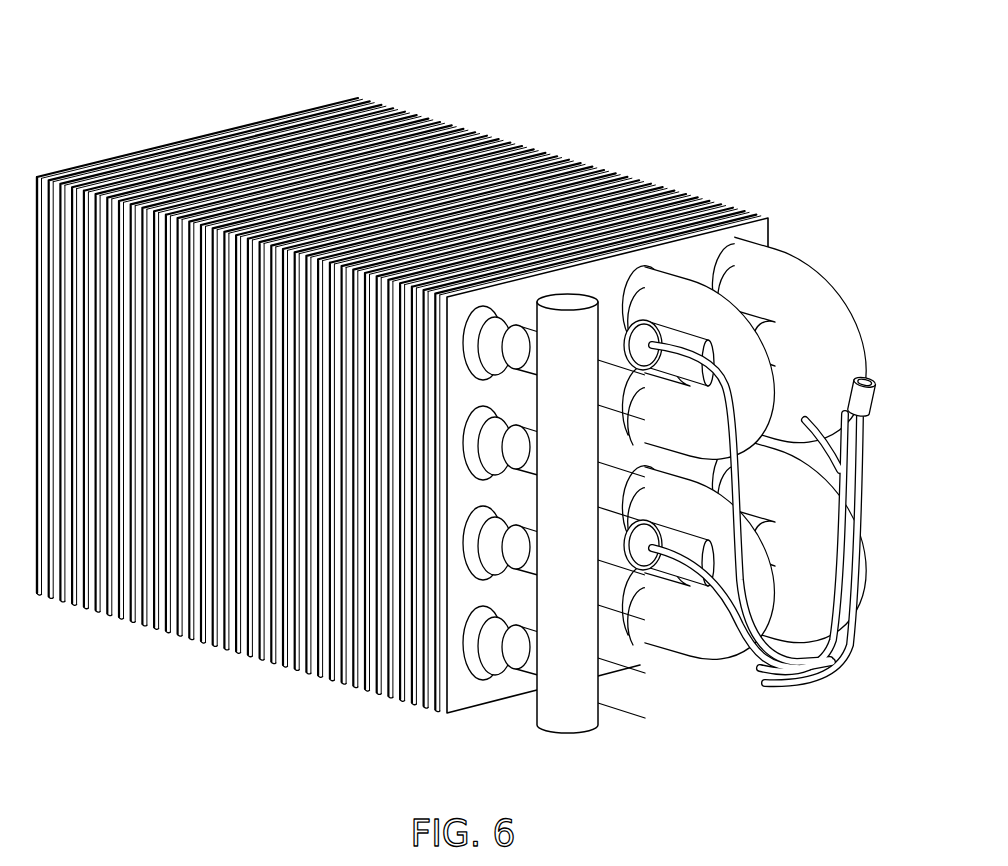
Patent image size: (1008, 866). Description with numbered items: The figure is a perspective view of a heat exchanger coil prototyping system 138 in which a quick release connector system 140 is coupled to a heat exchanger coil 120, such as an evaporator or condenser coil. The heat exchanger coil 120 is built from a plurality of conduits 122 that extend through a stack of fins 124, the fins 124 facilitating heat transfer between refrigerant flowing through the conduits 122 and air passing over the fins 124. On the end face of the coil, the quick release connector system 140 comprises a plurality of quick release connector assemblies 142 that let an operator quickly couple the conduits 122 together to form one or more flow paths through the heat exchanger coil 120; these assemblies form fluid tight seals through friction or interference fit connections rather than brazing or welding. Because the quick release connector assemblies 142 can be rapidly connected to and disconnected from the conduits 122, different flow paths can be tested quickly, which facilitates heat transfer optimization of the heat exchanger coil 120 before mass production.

The heat exchanger coil 120 is at (527, 126).
The conduits 122 is at (730, 273).
The fins 124 is at (209, 670).
The heat exchanger coil prototyping system 138 is at (222, 100).
The quick release connector system 140 is at (840, 712).
The quick release connector assemblies 142 is at (798, 297).